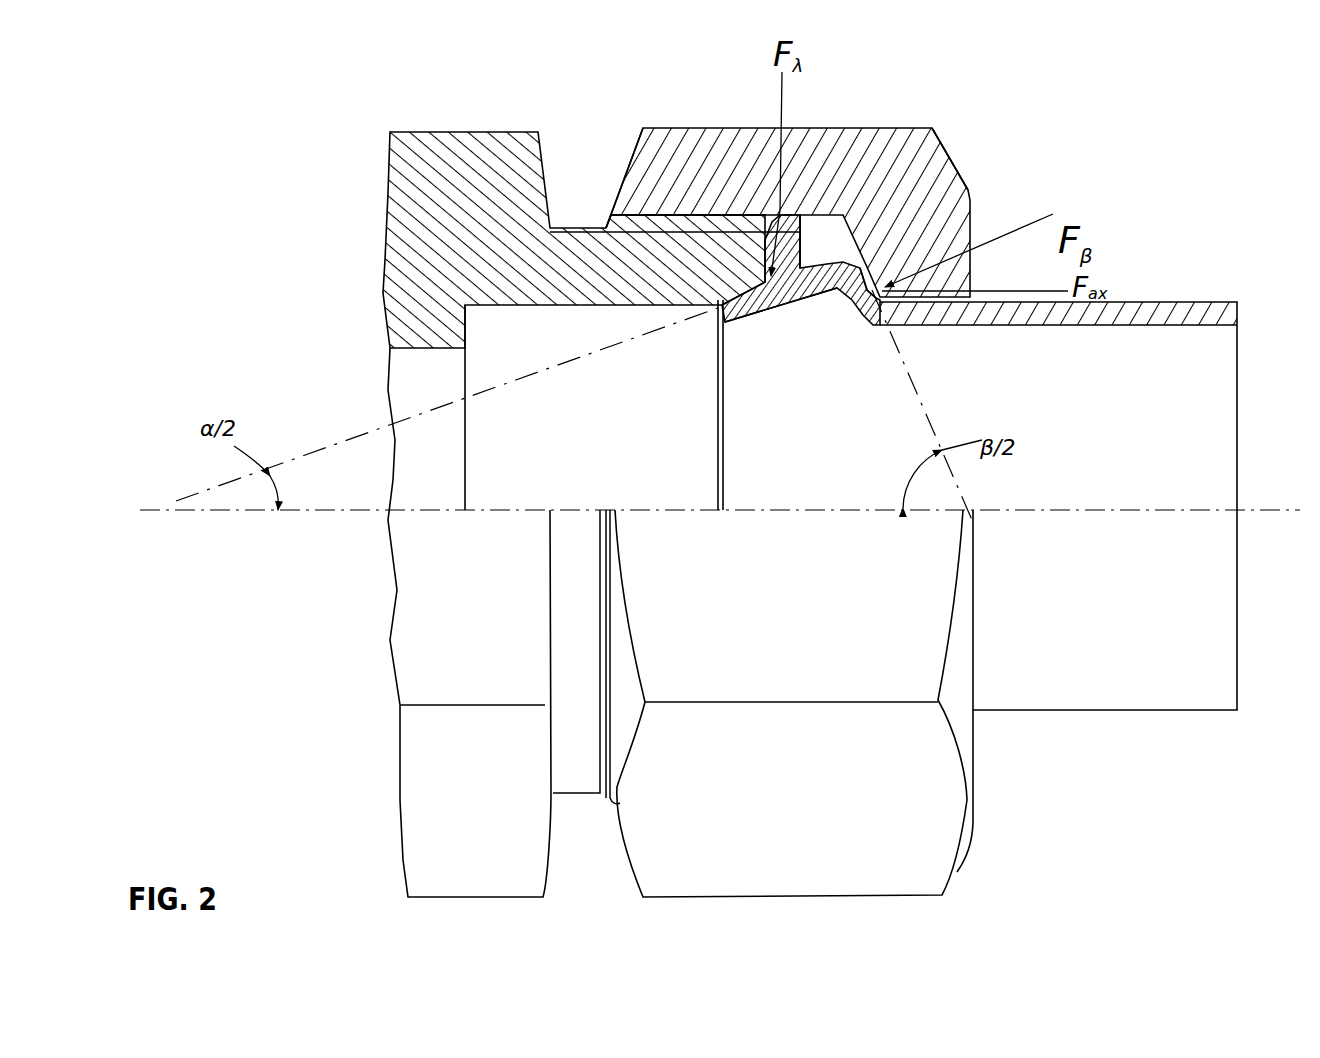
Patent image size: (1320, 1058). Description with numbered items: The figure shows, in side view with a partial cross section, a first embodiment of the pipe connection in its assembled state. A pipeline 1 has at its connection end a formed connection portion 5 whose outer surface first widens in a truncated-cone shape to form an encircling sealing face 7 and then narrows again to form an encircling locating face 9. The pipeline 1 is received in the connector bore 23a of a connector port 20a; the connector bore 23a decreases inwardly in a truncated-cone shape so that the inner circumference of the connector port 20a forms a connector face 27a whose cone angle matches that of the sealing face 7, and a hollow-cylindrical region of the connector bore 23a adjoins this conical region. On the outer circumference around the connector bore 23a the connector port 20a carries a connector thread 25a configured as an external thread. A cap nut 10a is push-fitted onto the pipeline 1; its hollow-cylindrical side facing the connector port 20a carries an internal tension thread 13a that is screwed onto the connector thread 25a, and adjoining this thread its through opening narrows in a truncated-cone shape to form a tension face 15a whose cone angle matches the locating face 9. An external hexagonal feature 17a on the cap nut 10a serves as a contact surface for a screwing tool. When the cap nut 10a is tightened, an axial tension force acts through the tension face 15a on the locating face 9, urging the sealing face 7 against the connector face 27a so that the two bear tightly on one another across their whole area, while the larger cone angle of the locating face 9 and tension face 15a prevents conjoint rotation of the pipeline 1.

The pipeline 1 is at (1195, 283).
The connection portion 5 is at (797, 305).
The sealing face 7 is at (775, 275).
The locating face 9 is at (887, 283).
The cap nut 10a is at (908, 112).
The tension thread 13a is at (724, 226).
The tension face 15a is at (924, 190).
The external hexagonal feature 17a is at (910, 868).
The connector port 20a is at (365, 150).
The connector bore 23a is at (705, 418).
The connector thread 25a is at (735, 222).
The connector face 27a is at (768, 276).